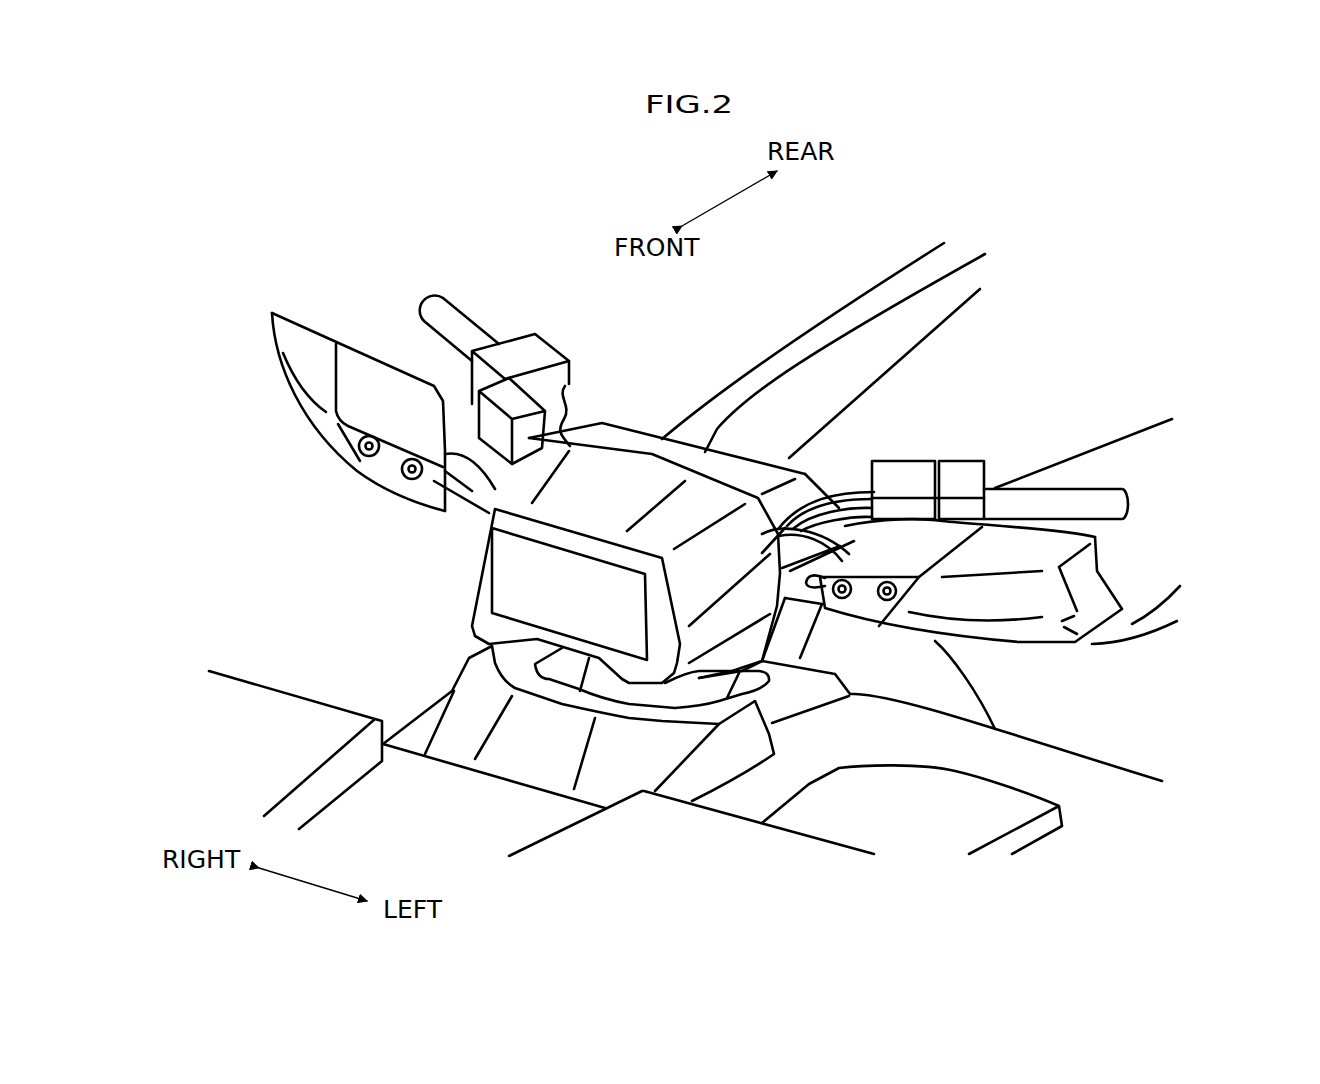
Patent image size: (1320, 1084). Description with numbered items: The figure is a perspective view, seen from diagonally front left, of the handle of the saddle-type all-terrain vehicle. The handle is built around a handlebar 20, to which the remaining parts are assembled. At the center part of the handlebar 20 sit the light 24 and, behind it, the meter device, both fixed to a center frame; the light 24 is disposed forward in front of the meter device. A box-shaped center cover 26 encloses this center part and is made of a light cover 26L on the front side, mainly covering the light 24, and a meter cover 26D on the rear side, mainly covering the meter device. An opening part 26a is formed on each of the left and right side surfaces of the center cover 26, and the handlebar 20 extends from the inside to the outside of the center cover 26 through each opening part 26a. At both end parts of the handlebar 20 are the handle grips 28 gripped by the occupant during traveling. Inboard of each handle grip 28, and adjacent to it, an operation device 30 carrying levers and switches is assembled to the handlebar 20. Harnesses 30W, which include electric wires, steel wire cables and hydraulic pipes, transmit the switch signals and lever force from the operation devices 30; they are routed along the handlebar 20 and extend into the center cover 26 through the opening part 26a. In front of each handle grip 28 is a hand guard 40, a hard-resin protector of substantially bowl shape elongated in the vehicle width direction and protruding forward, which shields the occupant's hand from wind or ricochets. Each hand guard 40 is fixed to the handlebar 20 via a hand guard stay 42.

The handlebar 20 is at (867, 545).
The light 24 is at (528, 592).
The center cover 26 is at (707, 352).
The light cover 26L is at (601, 505).
The meter cover 26D is at (655, 458).
The opening part 26a is at (790, 520).
The handle grip 28 is at (452, 330).
The operation device 30 is at (553, 333).
The harness 30W is at (868, 548).
The hand guard 40 is at (320, 423).
The hand guard stay 42 is at (466, 493).